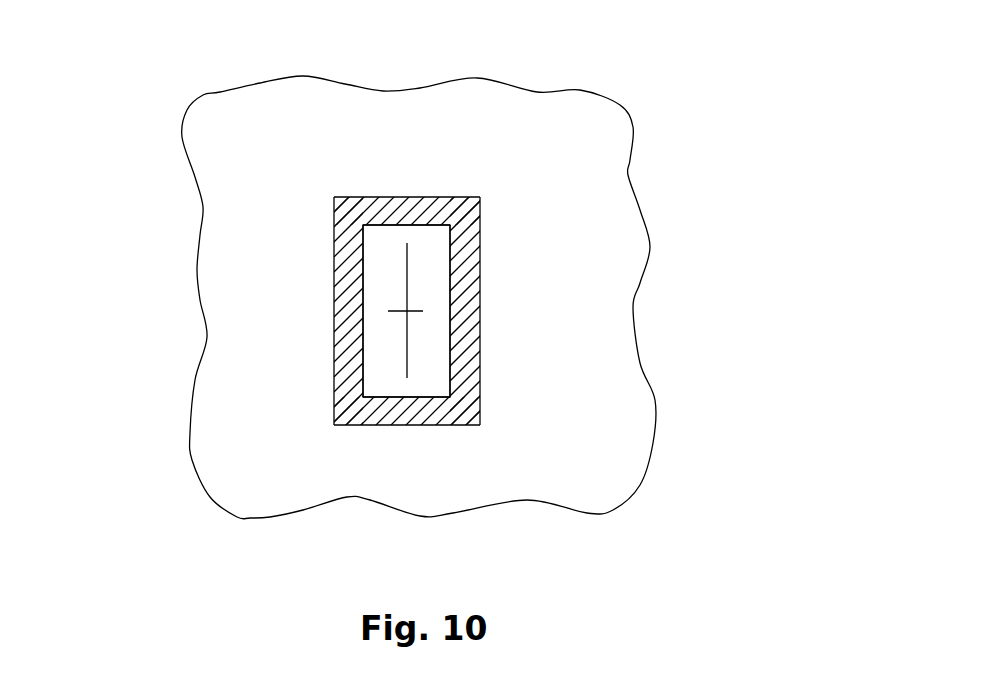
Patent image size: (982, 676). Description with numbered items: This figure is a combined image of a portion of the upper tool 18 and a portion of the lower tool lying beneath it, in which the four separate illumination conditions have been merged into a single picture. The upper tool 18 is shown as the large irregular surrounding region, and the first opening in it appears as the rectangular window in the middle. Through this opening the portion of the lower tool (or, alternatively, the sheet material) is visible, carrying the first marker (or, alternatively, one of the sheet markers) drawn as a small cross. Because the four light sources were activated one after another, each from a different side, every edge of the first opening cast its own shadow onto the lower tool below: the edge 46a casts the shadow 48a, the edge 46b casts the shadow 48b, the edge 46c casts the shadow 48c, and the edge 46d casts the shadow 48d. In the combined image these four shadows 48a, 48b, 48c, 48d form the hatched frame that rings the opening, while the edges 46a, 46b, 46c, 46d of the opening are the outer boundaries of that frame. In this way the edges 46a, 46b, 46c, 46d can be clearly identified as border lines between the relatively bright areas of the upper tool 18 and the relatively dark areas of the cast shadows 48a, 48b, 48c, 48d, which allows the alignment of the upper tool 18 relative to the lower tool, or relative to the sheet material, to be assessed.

The upper tool 18 is at (592, 125).
The edge of the first opening 46a is at (480, 290).
The edge of the first opening 46b is at (333, 288).
The edge of the first opening 46c is at (383, 197).
The edge of the first opening 46d is at (437, 425).
The shadow 48a is at (467, 333).
The shadow 48b is at (352, 343).
The shadow 48c is at (430, 210).
The shadow 48d is at (383, 412).